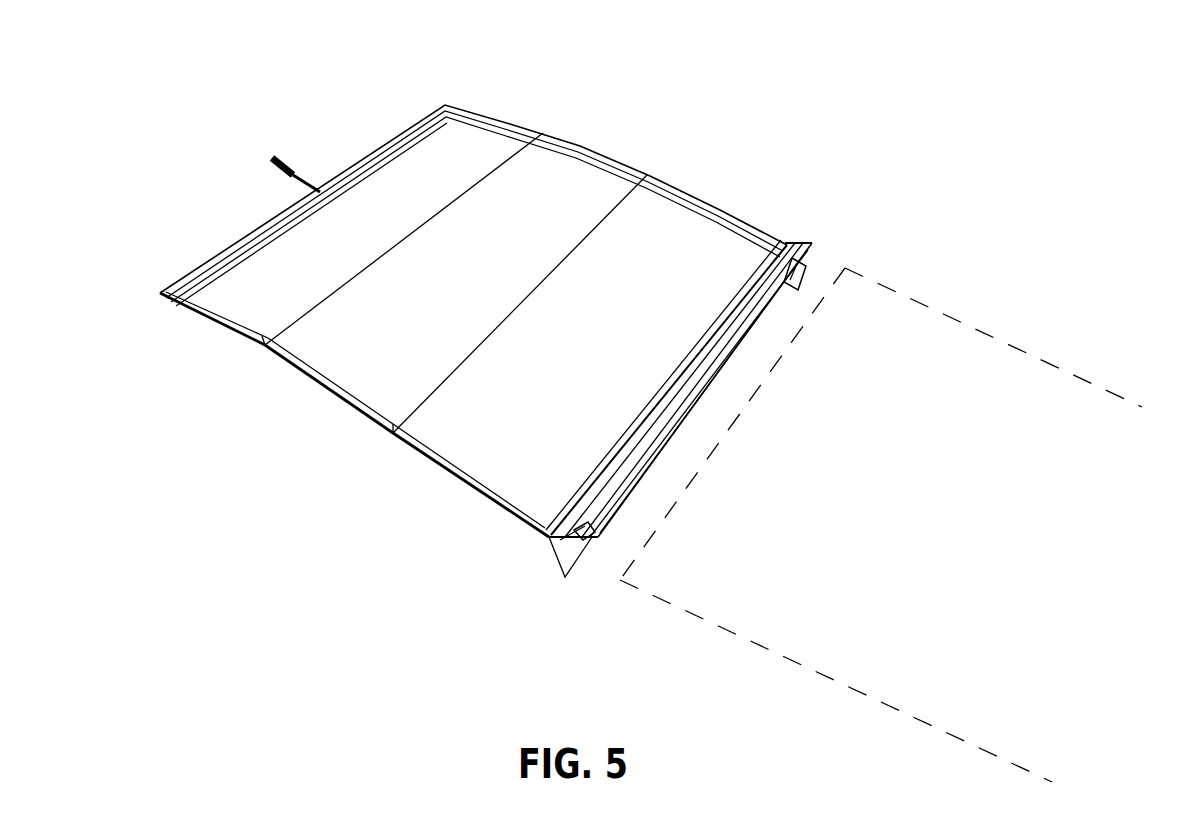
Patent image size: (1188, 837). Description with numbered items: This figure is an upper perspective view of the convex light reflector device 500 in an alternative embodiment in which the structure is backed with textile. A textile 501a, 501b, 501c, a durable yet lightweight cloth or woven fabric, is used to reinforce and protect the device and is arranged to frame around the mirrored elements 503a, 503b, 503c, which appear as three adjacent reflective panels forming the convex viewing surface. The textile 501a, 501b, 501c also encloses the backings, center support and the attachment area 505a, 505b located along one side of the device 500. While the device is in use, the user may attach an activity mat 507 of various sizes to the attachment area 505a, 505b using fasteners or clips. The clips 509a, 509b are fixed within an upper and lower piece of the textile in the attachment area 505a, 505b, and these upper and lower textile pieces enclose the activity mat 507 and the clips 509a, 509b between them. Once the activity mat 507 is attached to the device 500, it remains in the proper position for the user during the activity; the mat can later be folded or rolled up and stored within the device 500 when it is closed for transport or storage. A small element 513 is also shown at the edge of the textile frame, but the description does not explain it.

The convex light reflector device 500 is at (130, 552).
The textile 501a is at (406, 134).
The textile 501b is at (640, 176).
The textile 501c is at (620, 467).
The mirrored element 503a is at (472, 133).
The mirrored element 503b is at (563, 160).
The mirrored element 503c is at (695, 225).
The attachment area 505a is at (656, 455).
The attachment area 505b is at (763, 323).
The activity mat 507 is at (970, 368).
The clip 509a is at (590, 540).
The clip 509b is at (750, 340).
The electrical connector 513 is at (295, 163).